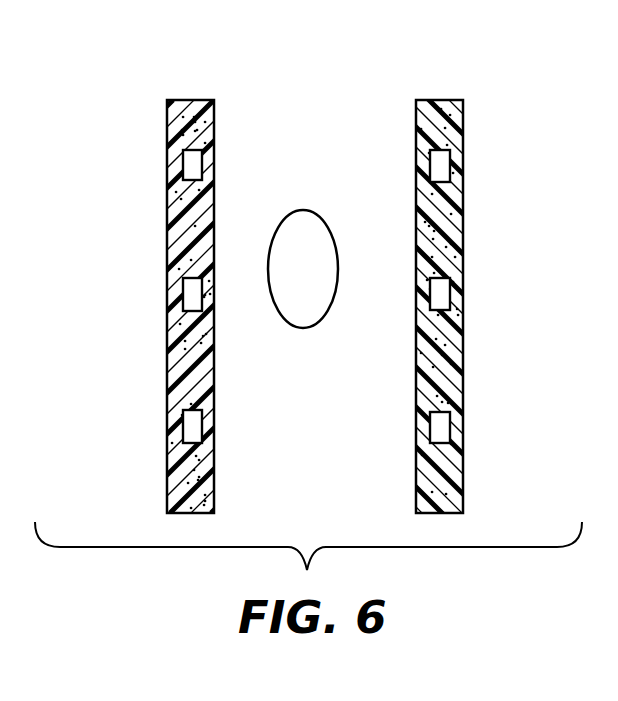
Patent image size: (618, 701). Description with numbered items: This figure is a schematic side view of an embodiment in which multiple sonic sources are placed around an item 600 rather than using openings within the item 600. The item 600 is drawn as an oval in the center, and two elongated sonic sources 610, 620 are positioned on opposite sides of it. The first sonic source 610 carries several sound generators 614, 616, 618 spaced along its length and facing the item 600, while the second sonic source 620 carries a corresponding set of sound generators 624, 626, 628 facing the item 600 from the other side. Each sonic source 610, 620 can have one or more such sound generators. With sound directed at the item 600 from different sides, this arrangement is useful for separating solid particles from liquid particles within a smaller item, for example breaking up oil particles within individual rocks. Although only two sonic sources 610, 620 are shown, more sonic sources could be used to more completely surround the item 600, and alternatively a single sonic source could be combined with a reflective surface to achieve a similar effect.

The item 600 is at (303, 269).
The sonic source 610 is at (215, 114).
The sound generator 614 is at (186, 164).
The sound generator 616 is at (186, 296).
The sound generator 618 is at (186, 426).
The sonic source 620 is at (464, 113).
The sound generator 624 is at (446, 168).
The sound generator 626 is at (446, 297).
The sound generator 628 is at (446, 432).